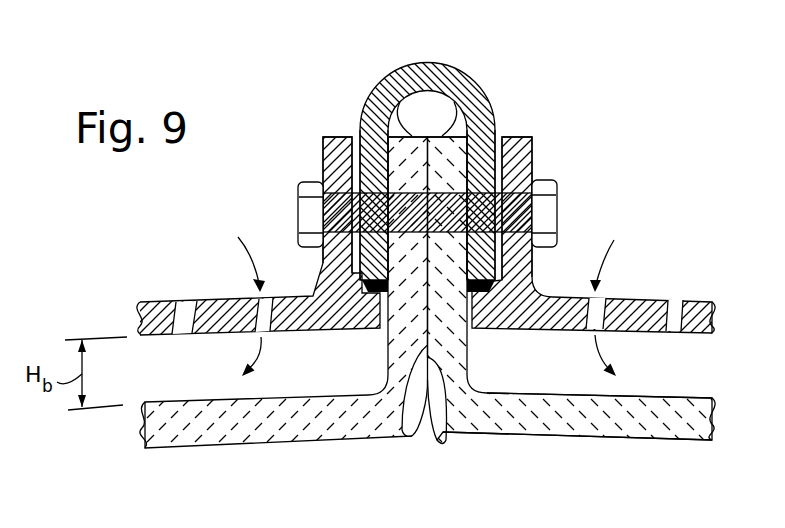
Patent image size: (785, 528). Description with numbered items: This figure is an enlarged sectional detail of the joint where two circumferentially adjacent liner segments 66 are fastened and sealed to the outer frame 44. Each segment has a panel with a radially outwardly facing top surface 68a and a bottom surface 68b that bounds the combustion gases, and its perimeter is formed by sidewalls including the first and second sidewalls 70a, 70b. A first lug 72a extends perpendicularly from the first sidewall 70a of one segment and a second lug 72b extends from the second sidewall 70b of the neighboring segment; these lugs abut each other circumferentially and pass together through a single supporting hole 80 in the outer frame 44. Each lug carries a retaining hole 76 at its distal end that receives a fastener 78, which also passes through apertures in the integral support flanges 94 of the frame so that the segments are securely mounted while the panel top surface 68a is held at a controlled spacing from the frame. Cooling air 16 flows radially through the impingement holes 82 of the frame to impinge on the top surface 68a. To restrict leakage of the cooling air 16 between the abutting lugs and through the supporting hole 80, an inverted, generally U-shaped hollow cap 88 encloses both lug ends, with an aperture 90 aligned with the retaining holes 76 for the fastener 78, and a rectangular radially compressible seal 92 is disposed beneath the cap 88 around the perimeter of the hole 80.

The cooling air 16 is at (616, 240).
The outer frame 44 is at (221, 300).
The liner segment 66 is at (562, 440).
The top surface 68a is at (643, 395).
The bottom surface 68b is at (647, 440).
The first sidewall 70a is at (397, 433).
The second sidewall 70b is at (445, 430).
The first lug 72a is at (457, 107).
The second lug 72b is at (391, 77).
The retaining hole 76 is at (361, 131).
The fastener 78 is at (552, 180).
The supporting hole 80 is at (470, 330).
The impingement hole 82 is at (679, 300).
The cap 88 is at (443, 63).
The aperture 90 is at (494, 135).
The seal 92 is at (382, 330).
The support flange 94 is at (533, 137).